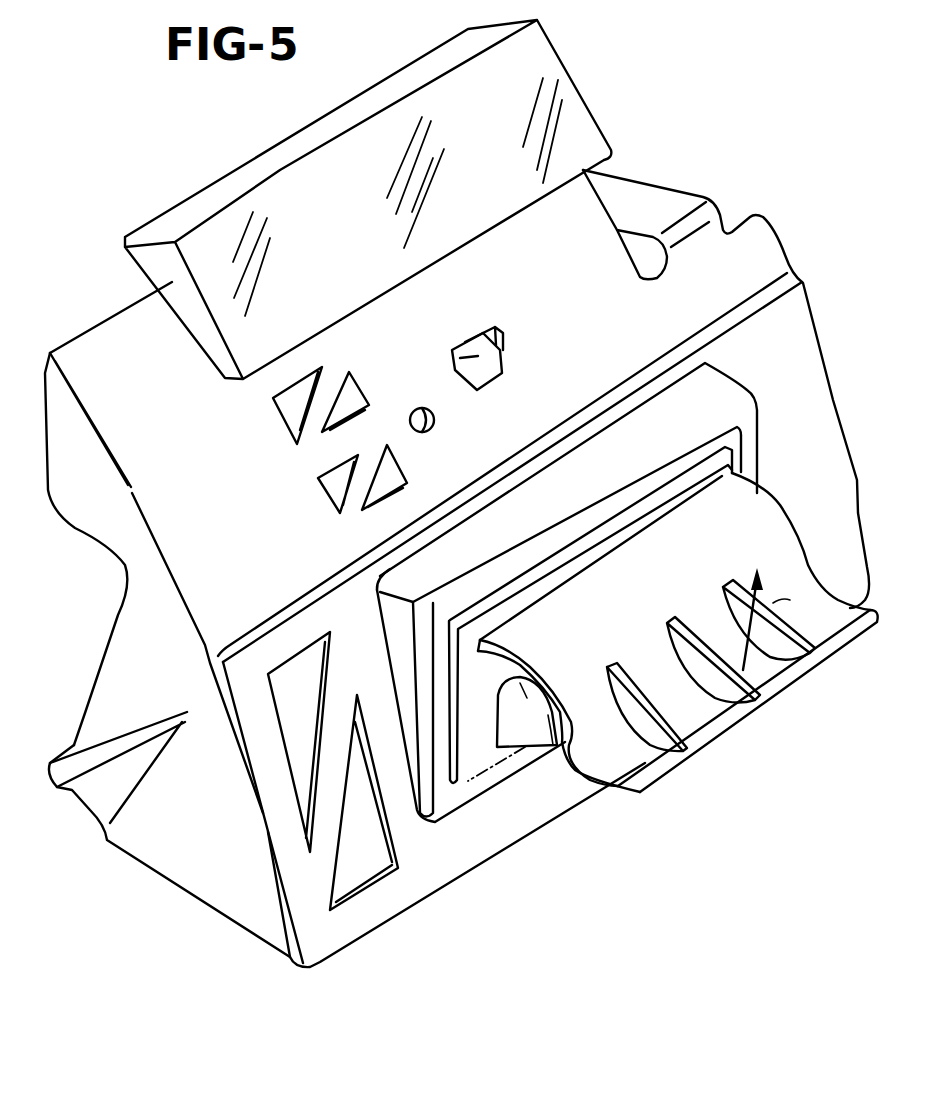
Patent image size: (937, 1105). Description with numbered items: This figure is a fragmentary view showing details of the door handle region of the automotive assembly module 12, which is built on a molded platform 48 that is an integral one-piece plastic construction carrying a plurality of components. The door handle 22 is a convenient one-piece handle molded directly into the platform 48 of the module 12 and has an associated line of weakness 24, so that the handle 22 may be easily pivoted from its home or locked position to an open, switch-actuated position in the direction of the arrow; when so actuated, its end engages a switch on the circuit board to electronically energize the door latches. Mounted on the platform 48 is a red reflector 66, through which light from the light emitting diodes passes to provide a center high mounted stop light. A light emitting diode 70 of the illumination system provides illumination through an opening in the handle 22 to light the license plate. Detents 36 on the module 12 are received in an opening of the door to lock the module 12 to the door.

The automotive assembly module 12 is at (100, 310).
The reflector 66 is at (330, 153).
The detents 36 is at (505, 362).
The door handle 22 is at (662, 601).
The line of weakness 24 is at (470, 781).
The light emitting diode 70 is at (523, 760).
The molded platform 48 is at (73, 738).